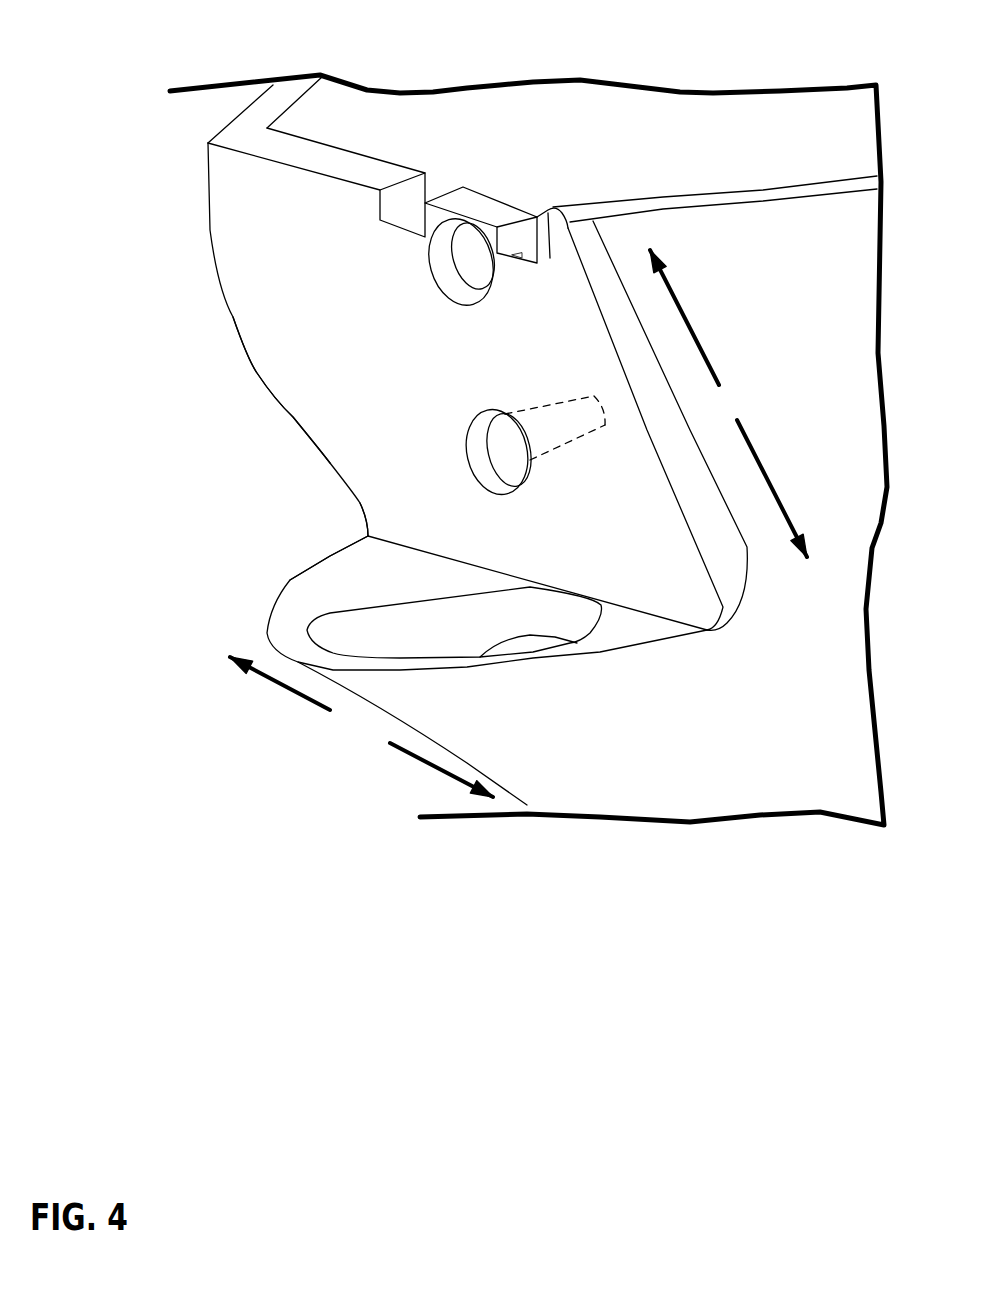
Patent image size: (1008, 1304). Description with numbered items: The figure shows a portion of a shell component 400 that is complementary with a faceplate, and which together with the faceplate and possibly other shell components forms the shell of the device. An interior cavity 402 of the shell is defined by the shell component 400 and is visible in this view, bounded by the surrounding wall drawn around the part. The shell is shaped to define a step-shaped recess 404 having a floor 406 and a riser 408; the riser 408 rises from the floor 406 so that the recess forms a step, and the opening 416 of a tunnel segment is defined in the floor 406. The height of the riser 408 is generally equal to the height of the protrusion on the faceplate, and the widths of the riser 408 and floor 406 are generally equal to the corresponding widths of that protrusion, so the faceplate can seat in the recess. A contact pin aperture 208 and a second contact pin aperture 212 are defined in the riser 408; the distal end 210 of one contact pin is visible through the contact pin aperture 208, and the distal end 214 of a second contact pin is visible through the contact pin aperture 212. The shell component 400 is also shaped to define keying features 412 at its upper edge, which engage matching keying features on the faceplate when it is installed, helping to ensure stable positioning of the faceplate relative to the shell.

The shell component 400 is at (783, 408).
The interior cavity 402 is at (513, 123).
The step-shaped recess 404 is at (353, 525).
The floor 406 is at (322, 588).
The riser 408 is at (317, 430).
The keying features 412 is at (515, 233).
The opening 416 is at (463, 628).
The contact pin aperture 208 is at (447, 272).
The distal end 210 is at (473, 272).
The contact pin aperture 212 is at (487, 473).
The distal end 214 is at (510, 458).